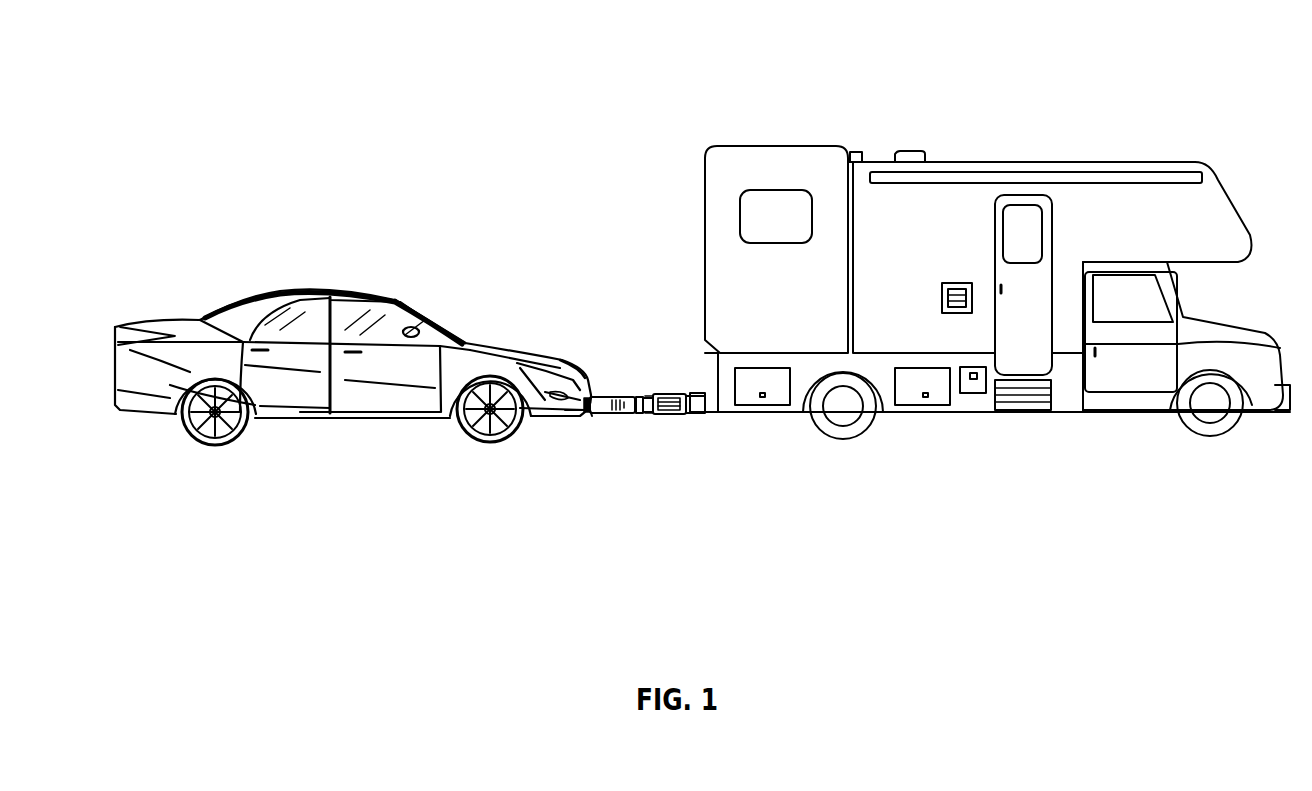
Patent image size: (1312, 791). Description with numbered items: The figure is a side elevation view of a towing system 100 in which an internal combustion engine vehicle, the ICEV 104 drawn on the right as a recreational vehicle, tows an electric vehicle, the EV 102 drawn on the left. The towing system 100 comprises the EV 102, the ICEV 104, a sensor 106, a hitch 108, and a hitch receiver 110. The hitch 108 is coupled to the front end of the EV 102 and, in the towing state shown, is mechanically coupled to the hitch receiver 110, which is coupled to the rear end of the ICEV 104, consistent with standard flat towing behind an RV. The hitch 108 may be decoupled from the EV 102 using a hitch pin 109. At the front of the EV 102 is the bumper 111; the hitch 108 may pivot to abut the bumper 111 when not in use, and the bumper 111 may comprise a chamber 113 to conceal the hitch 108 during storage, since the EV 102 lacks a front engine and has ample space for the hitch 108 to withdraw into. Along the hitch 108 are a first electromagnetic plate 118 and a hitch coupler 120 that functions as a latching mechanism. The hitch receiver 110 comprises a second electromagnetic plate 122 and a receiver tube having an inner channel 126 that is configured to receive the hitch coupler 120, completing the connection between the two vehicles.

The towing system 100 is at (538, 38).
The EV 102 is at (348, 290).
The ICEV 104 is at (945, 160).
The sensor 106 is at (592, 413).
The hitch 108 is at (606, 396).
The hitch pin 109 is at (590, 396).
The hitch receiver 110 is at (661, 415).
The bumper 111 is at (566, 362).
The chamber 113 is at (582, 418).
The first electromagnetic plate 118 is at (643, 413).
The hitch coupler 120 is at (675, 415).
The second electromagnetic plate 122 is at (650, 396).
The inner channel 126 is at (680, 396).